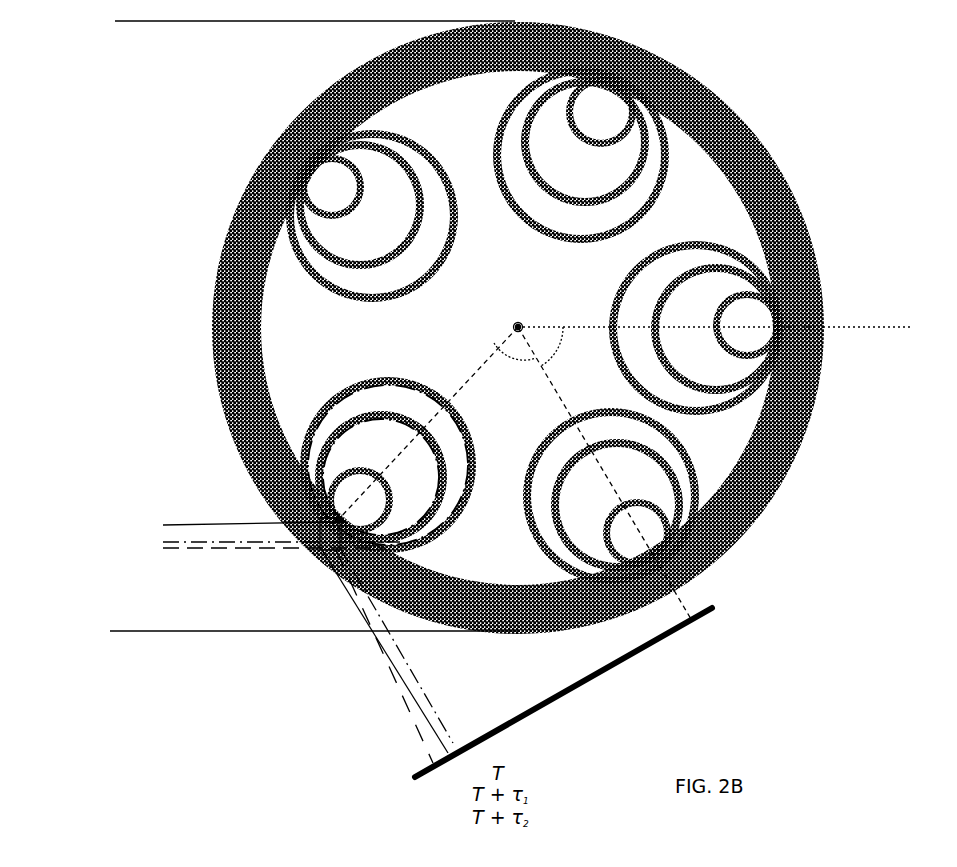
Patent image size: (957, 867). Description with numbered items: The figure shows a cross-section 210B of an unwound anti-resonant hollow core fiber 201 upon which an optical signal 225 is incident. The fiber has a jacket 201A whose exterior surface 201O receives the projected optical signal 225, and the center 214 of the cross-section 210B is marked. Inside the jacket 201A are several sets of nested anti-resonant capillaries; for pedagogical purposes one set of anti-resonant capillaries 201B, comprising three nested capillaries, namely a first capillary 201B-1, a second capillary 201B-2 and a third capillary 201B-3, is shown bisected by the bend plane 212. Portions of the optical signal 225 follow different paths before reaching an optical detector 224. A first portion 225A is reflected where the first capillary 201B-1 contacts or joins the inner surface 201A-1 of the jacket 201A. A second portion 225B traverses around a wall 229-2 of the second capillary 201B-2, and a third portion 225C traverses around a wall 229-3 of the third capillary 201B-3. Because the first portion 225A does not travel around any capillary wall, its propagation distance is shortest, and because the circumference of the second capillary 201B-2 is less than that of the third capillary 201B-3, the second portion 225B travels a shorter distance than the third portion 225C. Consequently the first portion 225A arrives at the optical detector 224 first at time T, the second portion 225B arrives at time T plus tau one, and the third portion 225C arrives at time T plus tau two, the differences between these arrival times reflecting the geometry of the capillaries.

The unwound anti-resonant hollow core fiber 201 is at (862, 277).
The exterior surface 201O is at (697, 53).
The jacket 201A is at (803, 201).
The inner surface 201A-1 is at (436, 583).
The set of anti-resonant capillaries 201B is at (414, 420).
The first capillary 201B-1 is at (370, 474).
The second capillary 201B-2 is at (390, 420).
The third capillary 201B-3 is at (333, 406).
The cross-section 210B is at (812, 503).
The bend plane 212 is at (505, 340).
The center 214 is at (518, 322).
The optical detector 224 is at (585, 693).
The optical signal 225 is at (188, 227).
The first portion 225A is at (358, 622).
The second portion 225B is at (378, 661).
The third portion 225C is at (425, 697).
The wall of the second capillary 229-2 is at (450, 438).
The wall of the third capillary 229-3 is at (500, 462).